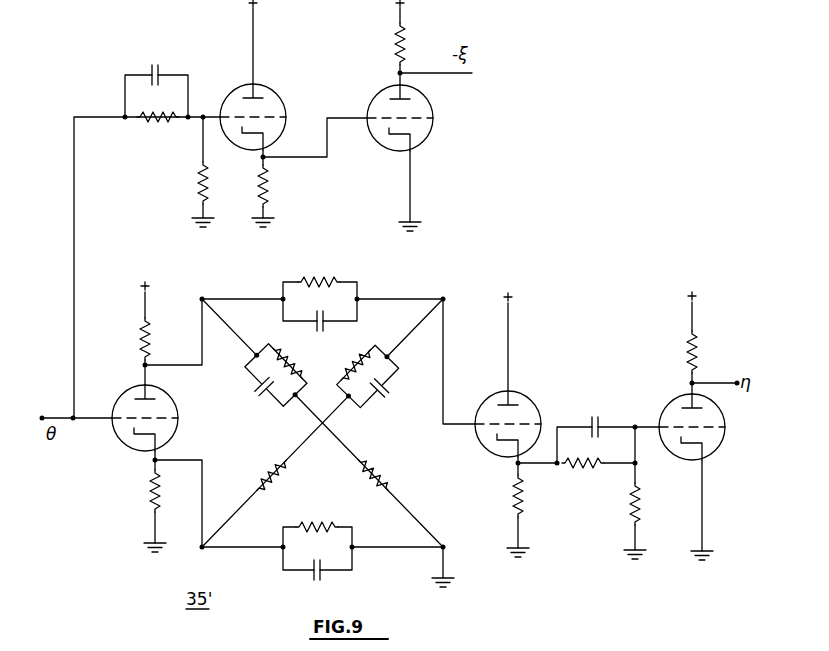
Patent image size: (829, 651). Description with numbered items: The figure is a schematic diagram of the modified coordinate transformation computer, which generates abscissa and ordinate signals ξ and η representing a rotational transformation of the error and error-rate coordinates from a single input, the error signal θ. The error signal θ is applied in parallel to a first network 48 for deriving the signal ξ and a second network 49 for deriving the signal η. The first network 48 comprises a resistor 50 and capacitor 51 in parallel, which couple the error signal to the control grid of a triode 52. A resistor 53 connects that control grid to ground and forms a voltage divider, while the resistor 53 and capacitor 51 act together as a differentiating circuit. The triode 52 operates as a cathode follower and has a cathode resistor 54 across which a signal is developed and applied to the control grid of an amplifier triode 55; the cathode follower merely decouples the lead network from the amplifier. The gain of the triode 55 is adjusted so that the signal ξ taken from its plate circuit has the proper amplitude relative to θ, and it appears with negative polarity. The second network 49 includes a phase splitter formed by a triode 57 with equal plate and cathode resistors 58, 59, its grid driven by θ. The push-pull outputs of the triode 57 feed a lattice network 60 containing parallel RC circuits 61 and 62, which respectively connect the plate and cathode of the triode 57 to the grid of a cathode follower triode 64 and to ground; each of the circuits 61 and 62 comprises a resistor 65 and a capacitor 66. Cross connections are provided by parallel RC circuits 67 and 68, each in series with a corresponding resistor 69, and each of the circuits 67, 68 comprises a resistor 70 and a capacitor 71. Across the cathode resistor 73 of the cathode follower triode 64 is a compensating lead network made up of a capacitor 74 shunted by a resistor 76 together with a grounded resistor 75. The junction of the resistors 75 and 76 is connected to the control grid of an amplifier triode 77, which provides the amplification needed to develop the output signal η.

The first network 48 is at (104, 110).
The second network 49 is at (100, 426).
The resistor 50 is at (165, 125).
The capacitor 51 is at (160, 72).
The triode 52 is at (276, 88).
The resistor 53 is at (200, 176).
The cathode resistor 54 is at (270, 185).
The triode 55 is at (423, 144).
The triode 57 is at (177, 404).
The plate resistor 58 is at (151, 337).
The cathode resistor 59 is at (161, 498).
The lattice network 60 is at (385, 298).
The parallel RC circuit 61 is at (283, 293).
The parallel RC circuit 62 is at (282, 552).
The cathode follower triode 64 is at (490, 392).
The resistor 65 is at (321, 282).
The capacitor 66 is at (318, 315).
The parallel RC circuit 67 is at (250, 356).
The parallel RC circuit 68 is at (392, 382).
The resistor 69 is at (276, 461).
The resistor 70 is at (293, 366).
The capacitor 71 is at (262, 396).
The cathode resistor 73 is at (516, 493).
The capacitor 74 is at (599, 420).
The grounded resistor 75 is at (640, 514).
The resistor 76 is at (589, 471).
The triode 77 is at (675, 400).